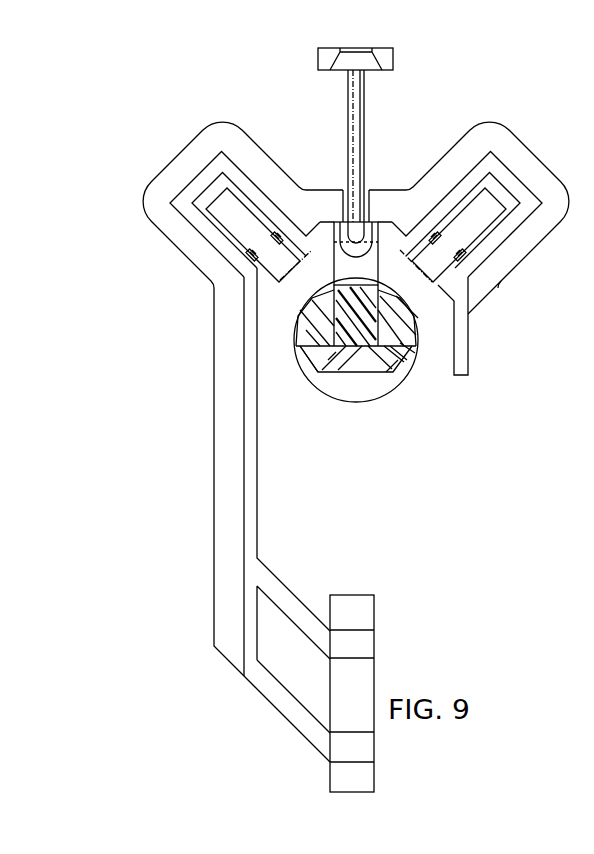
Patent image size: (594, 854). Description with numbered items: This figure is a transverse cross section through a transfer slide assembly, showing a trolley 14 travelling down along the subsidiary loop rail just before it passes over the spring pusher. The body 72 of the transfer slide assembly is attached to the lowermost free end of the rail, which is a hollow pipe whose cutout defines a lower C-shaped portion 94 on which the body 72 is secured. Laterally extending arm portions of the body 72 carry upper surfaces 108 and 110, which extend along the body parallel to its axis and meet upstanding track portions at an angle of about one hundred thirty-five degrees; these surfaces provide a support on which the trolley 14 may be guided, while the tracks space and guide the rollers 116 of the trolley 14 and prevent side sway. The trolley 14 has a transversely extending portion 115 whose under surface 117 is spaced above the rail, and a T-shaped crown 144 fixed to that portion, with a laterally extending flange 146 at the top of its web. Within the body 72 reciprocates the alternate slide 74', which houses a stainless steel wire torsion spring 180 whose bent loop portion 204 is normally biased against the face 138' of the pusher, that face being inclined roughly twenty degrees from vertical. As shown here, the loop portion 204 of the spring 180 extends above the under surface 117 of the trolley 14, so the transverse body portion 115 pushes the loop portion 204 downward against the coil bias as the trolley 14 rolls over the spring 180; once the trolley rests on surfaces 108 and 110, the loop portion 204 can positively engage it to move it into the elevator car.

The trolley 14 is at (210, 430).
The body 72 is at (350, 365).
The slide 74' is at (300, 369).
The lower C-shaped portion 94 is at (393, 364).
The upper surface 108 is at (406, 294).
The upper surface 110 is at (302, 310).
The transversely extending portion 115 is at (407, 195).
The rollers 116 is at (213, 196).
The under surface 117 is at (343, 197).
The face 138' is at (305, 236).
The crown 144 is at (380, 110).
The flange 146 is at (368, 48).
The torsion spring 180 is at (393, 263).
The bent loop portion 204 is at (372, 222).